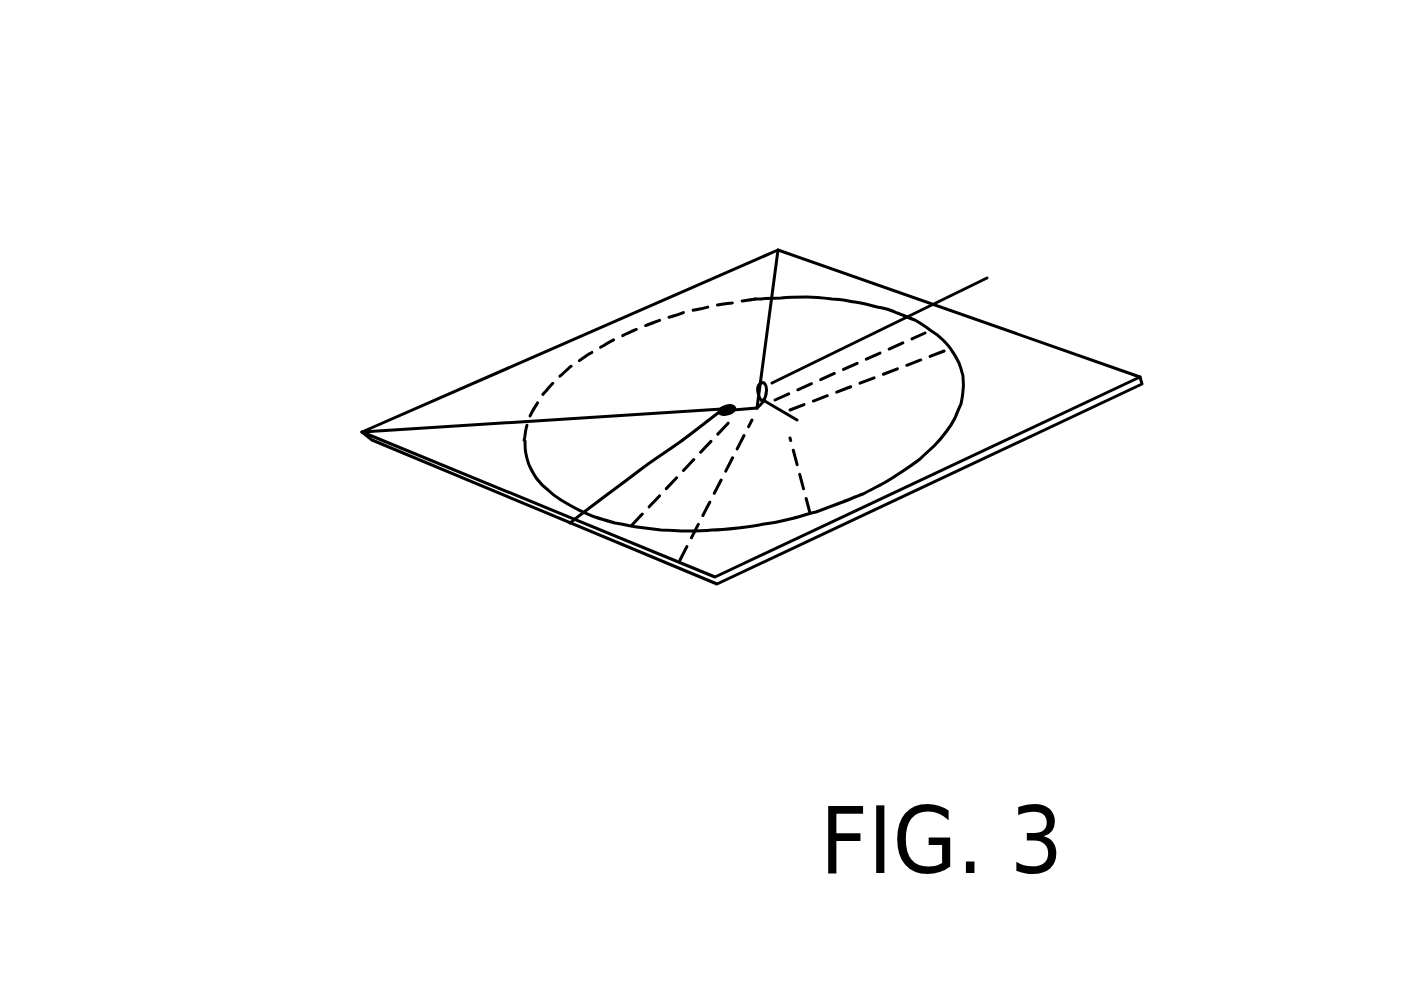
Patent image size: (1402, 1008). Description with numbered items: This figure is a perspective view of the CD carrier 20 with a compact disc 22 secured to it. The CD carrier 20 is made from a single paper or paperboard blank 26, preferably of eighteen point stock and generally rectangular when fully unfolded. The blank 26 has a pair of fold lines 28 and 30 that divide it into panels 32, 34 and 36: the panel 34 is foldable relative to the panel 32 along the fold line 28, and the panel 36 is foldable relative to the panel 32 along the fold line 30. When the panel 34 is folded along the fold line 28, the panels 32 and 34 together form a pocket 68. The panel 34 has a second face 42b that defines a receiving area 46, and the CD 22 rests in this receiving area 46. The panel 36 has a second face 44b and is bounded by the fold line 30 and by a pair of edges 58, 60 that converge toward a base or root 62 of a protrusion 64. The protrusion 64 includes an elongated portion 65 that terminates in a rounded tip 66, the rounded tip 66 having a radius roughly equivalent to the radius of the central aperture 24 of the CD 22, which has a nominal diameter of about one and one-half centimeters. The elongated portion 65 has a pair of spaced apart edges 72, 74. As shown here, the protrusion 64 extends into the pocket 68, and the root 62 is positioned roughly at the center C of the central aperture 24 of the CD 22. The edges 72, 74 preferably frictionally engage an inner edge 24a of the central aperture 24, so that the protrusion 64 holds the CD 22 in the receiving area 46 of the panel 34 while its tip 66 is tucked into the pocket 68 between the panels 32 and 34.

The CD carrier 20 is at (1155, 232).
The compact disc 22 is at (903, 413).
The central aperture 24 is at (757, 410).
The inner edge 24a is at (755, 405).
The blank 26 is at (417, 464).
The fold line 28 is at (752, 570).
The fold line 30 is at (433, 400).
The panel 32 is at (496, 461).
The panel 34 is at (1037, 375).
The panel 36 is at (703, 362).
The second face 42b is at (1010, 413).
The second face 44b is at (583, 397).
The receiving area 46 is at (1008, 396).
The edge 58 is at (565, 418).
The edge 60 is at (775, 335).
The root 62 is at (600, 506).
The protrusion 64 is at (680, 560).
The elongated portion 65 is at (990, 336).
The rounded tip 66 is at (812, 515).
The pocket 68 is at (570, 523).
The edge 72 is at (632, 527).
The edge 74 is at (933, 332).
The center C is at (960, 291).